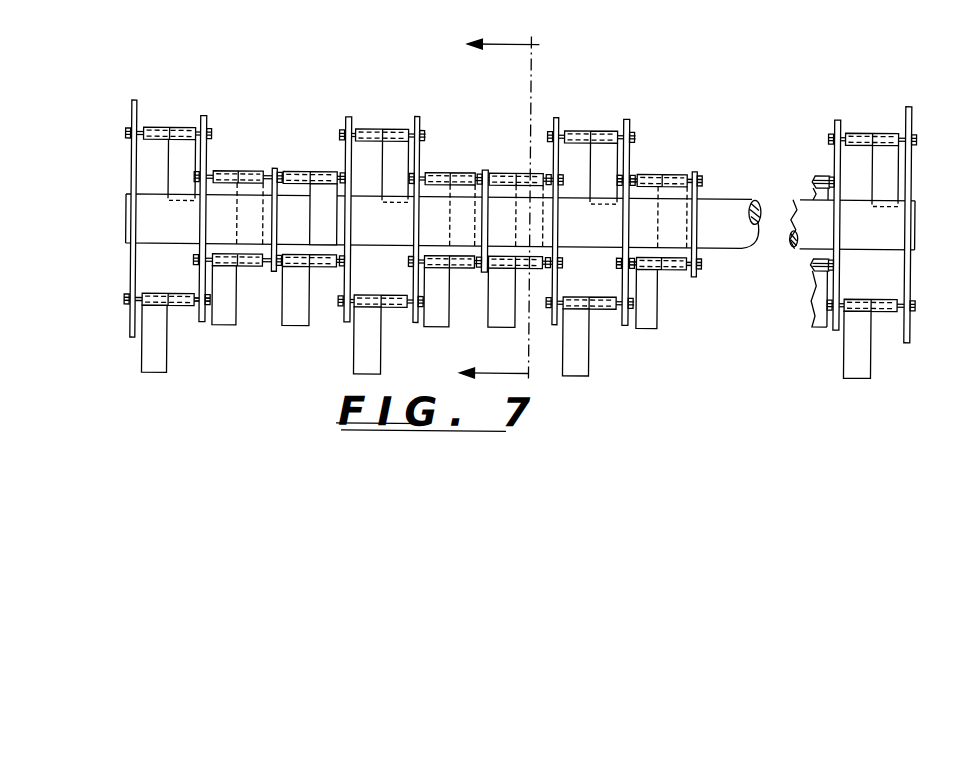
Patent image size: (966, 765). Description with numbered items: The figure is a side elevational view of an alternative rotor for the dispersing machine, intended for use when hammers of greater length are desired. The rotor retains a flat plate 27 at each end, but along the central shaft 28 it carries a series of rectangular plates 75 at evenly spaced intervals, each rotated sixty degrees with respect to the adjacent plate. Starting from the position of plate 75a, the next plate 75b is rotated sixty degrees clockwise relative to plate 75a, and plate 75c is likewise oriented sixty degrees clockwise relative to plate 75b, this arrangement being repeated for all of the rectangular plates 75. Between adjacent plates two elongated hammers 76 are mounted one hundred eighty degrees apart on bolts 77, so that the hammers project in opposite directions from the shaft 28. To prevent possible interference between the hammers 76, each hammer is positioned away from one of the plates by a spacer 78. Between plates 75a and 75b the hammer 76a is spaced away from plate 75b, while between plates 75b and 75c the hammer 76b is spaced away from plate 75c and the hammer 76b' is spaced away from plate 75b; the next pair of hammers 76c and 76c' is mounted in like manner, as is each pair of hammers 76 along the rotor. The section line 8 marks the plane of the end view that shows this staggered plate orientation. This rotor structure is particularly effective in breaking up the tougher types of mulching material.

The section line 8- 8 is at (489, 209).
The flat plate 27 is at (136, 102).
The central shaft 28 is at (726, 198).
The rectangular plate 75 is at (204, 115).
The rectangular plate 75a is at (348, 116).
The rectangular plate 75b is at (417, 115).
The rectangular plate 75c is at (487, 168).
The elongated hammer 76 is at (162, 367).
The elongated hammer 76a is at (356, 362).
The elongated hammer 76b is at (430, 317).
The elongated hammer 76b' is at (477, 190).
The elongated hammer 76c is at (508, 318).
The elongated hammer 76c' is at (561, 160).
The bolt 77 is at (142, 304).
The spacer 78 is at (177, 306).